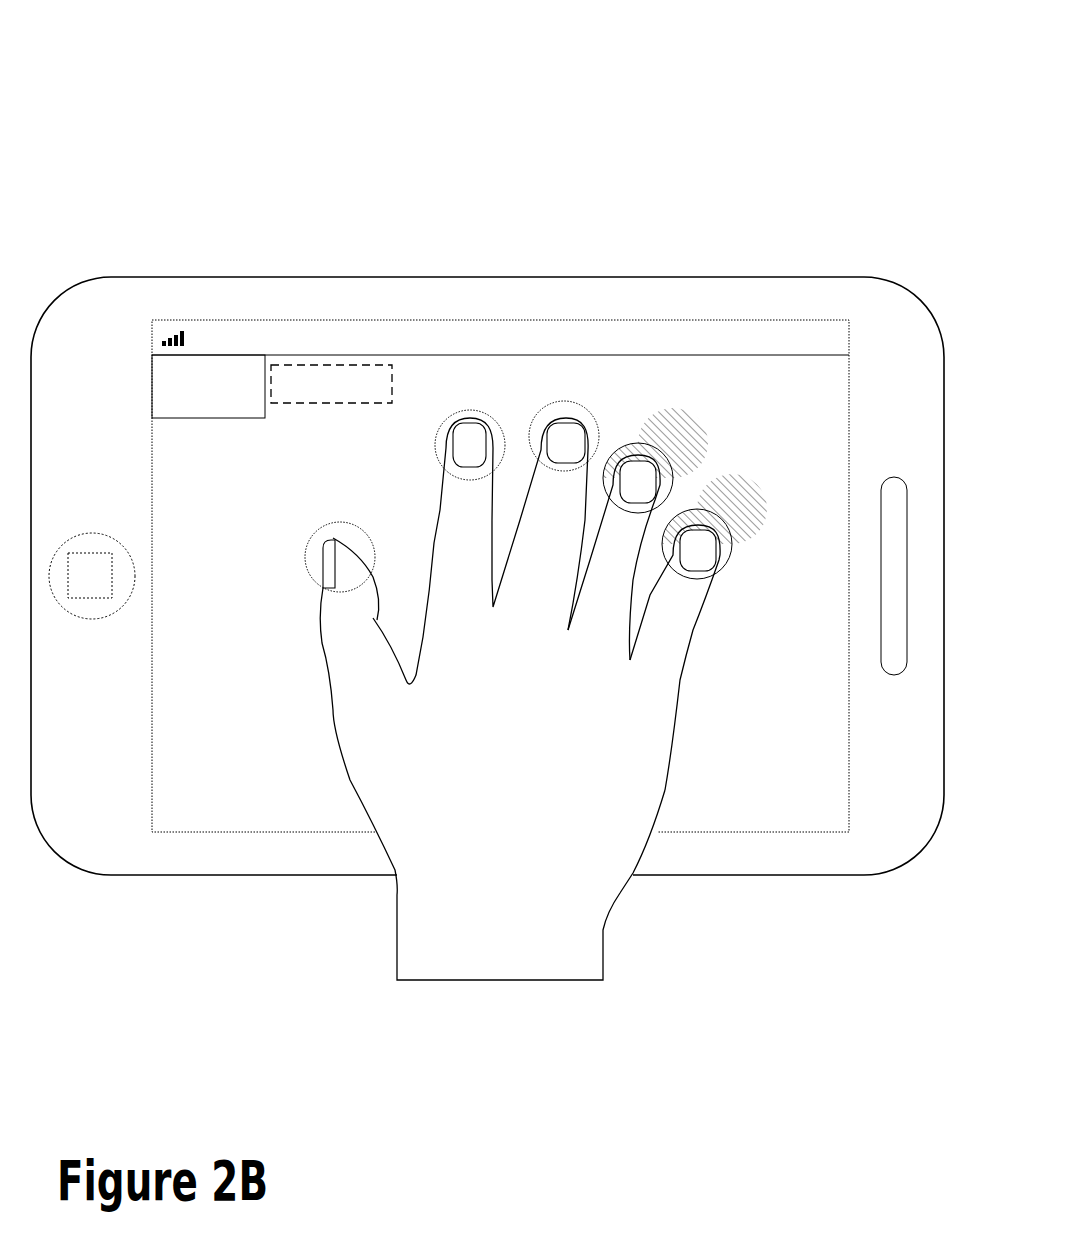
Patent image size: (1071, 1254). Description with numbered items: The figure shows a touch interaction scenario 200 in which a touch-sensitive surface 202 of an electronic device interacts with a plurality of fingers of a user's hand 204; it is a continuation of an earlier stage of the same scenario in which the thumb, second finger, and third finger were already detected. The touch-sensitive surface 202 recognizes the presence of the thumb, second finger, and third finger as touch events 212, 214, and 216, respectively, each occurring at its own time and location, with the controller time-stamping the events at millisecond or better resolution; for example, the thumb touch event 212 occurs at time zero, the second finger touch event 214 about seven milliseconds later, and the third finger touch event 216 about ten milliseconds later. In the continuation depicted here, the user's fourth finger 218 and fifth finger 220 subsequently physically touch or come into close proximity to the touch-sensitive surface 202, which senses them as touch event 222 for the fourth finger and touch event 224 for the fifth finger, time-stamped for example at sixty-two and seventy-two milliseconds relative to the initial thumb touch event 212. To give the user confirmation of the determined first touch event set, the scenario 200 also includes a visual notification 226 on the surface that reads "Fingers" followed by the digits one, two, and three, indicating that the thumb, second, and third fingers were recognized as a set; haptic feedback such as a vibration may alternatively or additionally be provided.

The touch interaction scenario 200 is at (650, 115).
The touch-sensitive surface 202 is at (803, 408).
The user's hand 204 is at (603, 930).
The touch event 212 is at (312, 540).
The touch event 214 is at (471, 411).
The touch event 216 is at (577, 405).
The fourth finger 218 is at (598, 510).
The fifth finger 220 is at (693, 630).
The touch event 222 is at (653, 453).
The touch event 224 is at (698, 511).
The visual notification 226 is at (335, 365).